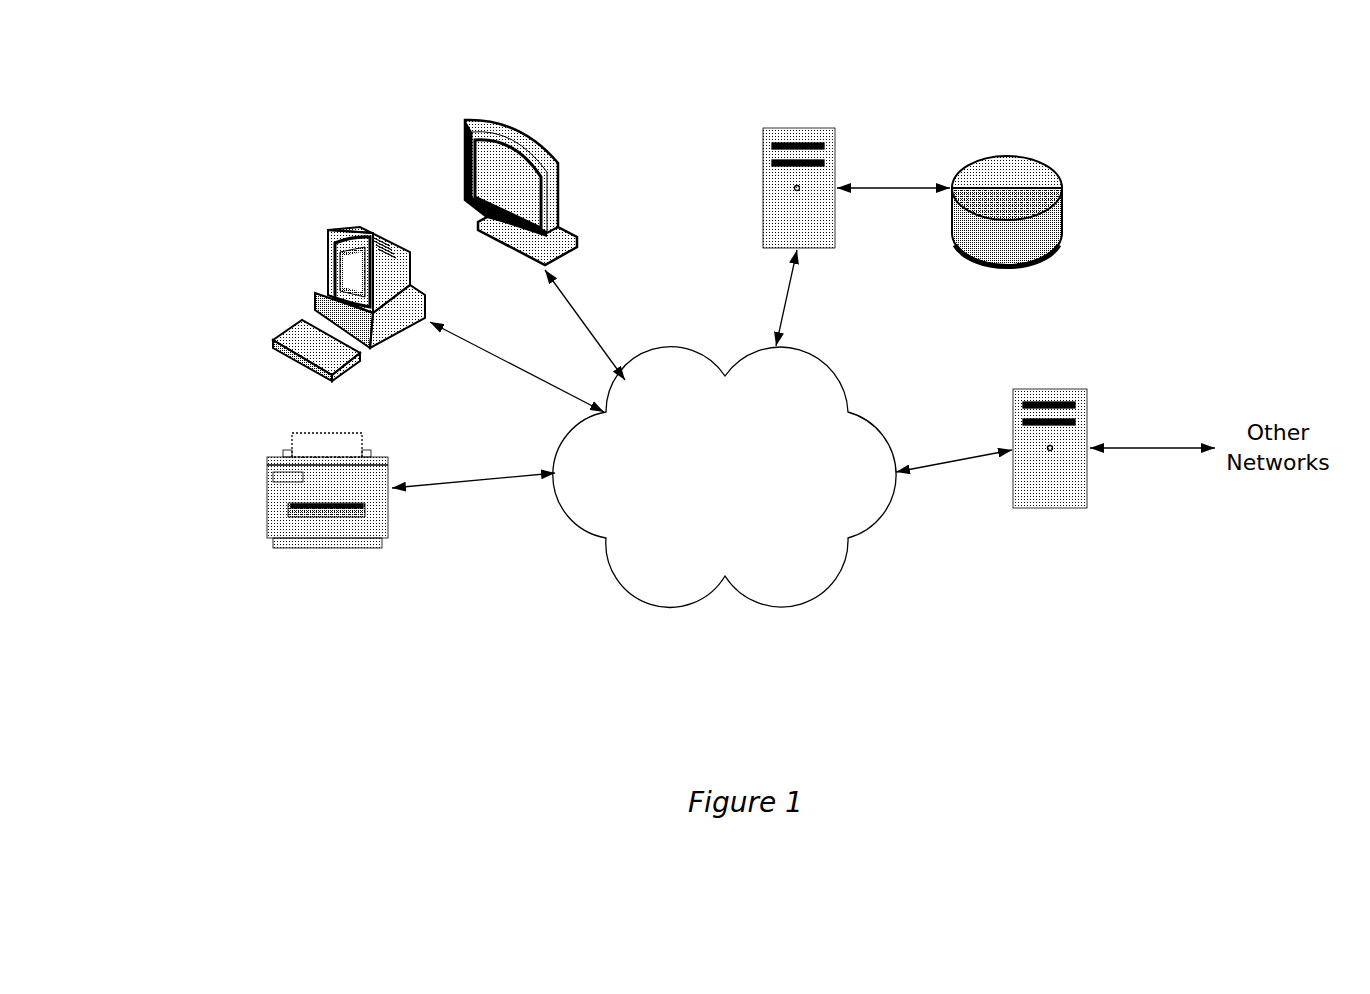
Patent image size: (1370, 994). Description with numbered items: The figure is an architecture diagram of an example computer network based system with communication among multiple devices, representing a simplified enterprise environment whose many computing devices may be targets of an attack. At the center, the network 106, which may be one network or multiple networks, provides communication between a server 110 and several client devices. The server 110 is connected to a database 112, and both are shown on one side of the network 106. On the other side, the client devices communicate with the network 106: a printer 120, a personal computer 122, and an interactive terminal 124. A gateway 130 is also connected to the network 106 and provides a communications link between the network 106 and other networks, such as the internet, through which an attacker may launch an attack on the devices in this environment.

The network 106 is at (704, 504).
The server 110 is at (798, 128).
The database 112 is at (1035, 160).
The printer 120 is at (267, 488).
The personal computer 122 is at (351, 228).
The interactive terminal 124 is at (557, 163).
The gateway 130 is at (1050, 389).